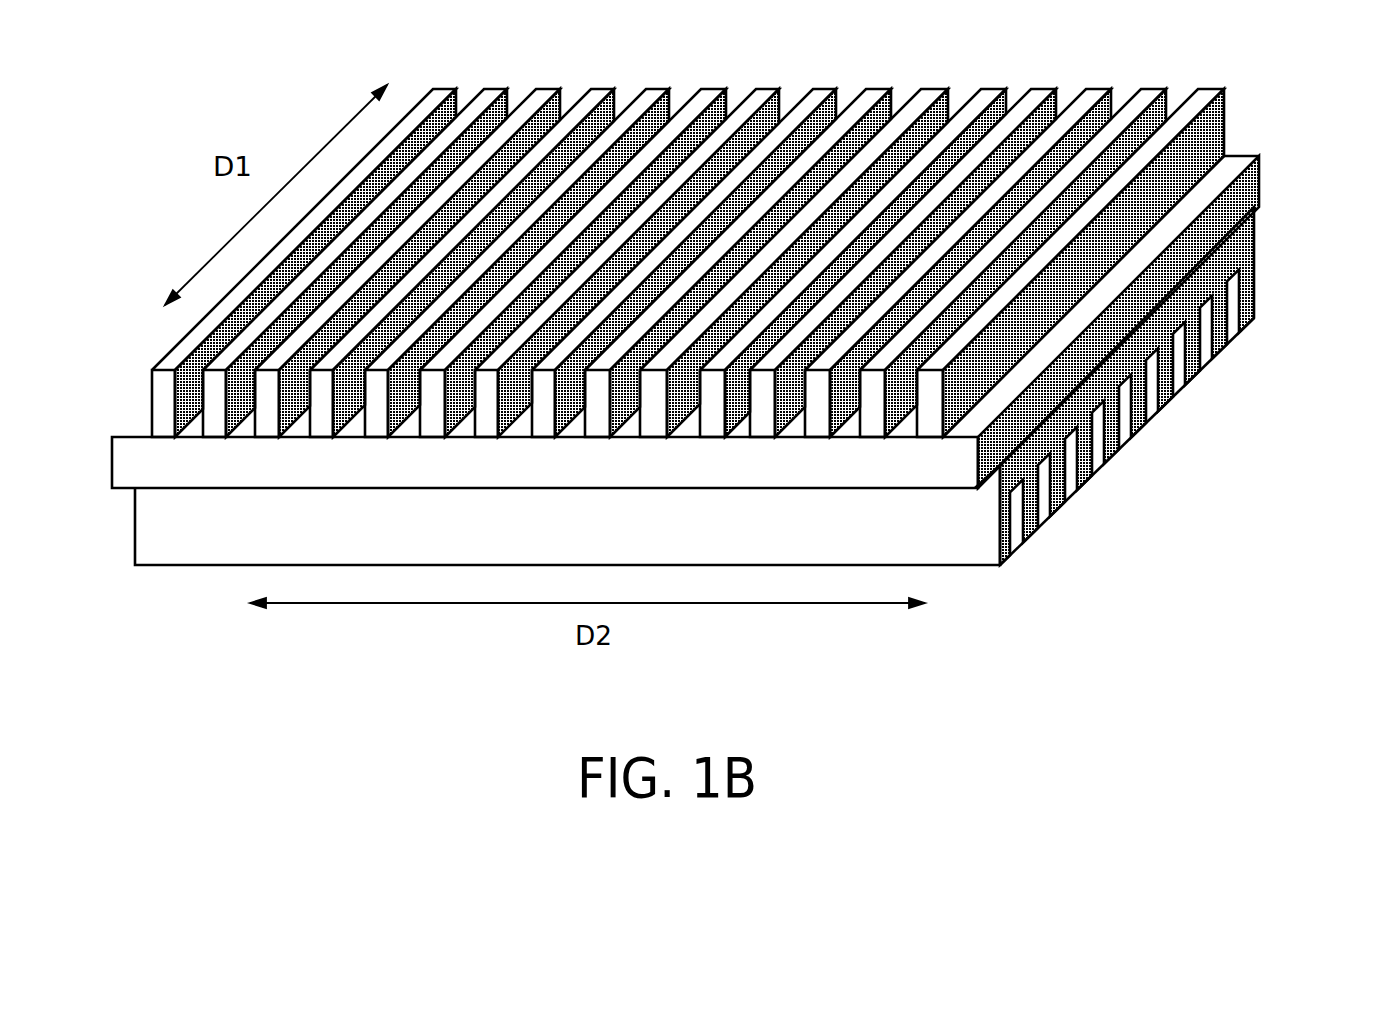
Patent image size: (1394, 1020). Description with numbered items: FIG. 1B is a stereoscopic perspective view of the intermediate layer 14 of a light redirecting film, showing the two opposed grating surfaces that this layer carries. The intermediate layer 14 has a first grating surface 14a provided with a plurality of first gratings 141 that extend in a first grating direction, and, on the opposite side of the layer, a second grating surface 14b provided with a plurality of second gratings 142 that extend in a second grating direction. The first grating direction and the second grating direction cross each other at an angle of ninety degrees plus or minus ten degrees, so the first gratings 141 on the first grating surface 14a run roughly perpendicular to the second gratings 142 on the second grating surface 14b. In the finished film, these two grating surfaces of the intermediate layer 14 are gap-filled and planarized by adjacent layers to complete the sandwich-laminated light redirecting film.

The intermediate layer 14 is at (155, 473).
The first grating surface 14a is at (125, 366).
The second grating surface 14b is at (1280, 256).
The first gratings 141 is at (163, 415).
The second gratings 142 is at (1158, 392).